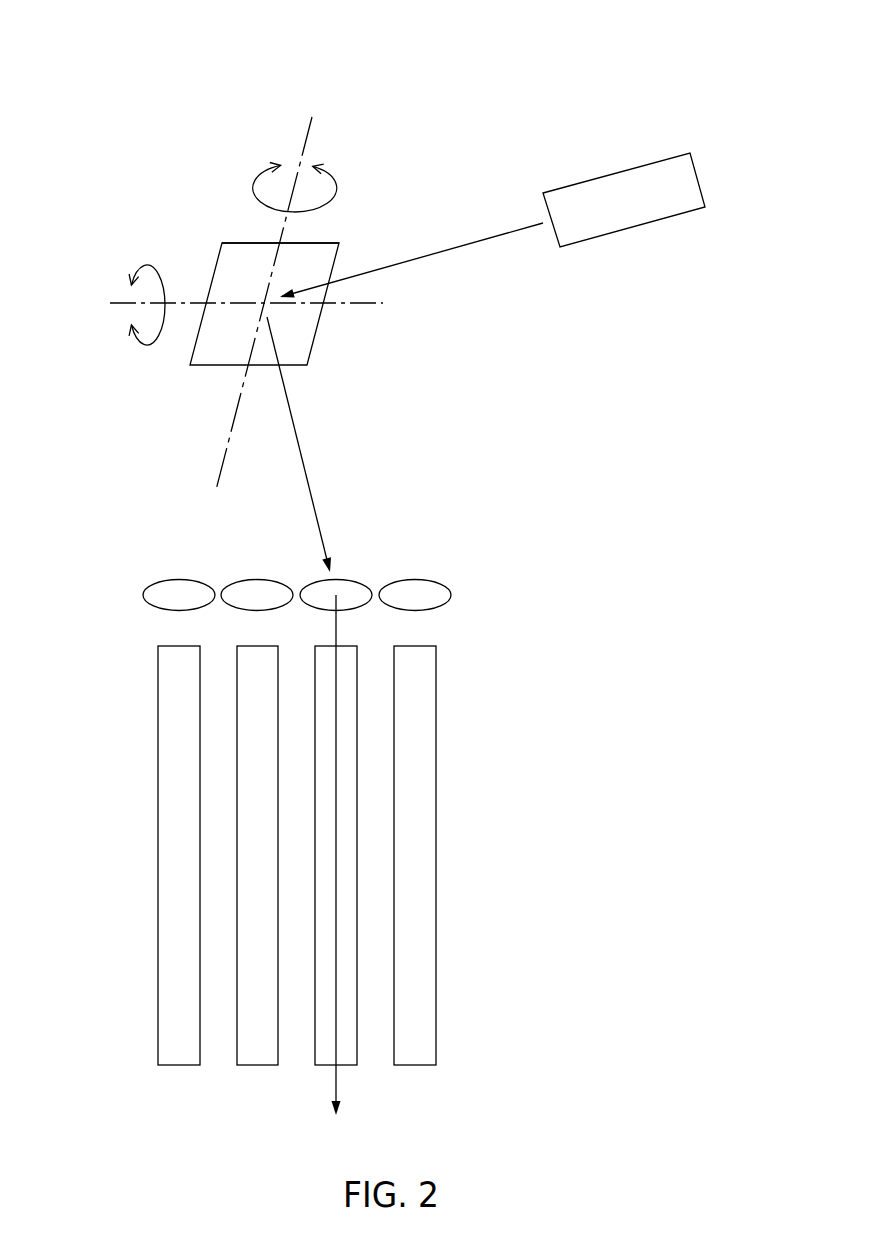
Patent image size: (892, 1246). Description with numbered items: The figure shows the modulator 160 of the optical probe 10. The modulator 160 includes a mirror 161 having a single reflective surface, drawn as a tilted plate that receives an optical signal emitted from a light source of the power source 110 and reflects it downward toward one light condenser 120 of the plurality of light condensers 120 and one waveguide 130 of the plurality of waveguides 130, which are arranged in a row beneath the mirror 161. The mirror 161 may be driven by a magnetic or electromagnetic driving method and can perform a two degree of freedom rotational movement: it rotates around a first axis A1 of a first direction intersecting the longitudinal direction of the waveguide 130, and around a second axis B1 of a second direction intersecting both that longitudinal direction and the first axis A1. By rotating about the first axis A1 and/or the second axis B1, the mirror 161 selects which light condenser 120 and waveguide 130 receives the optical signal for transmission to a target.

The optical probe 10 is at (132, 82).
The power source 110 is at (621, 182).
The light condenser 120 is at (428, 580).
The waveguide 130 is at (433, 803).
The modulator 160 is at (211, 376).
The mirror 161 is at (222, 242).
The first axis A1 is at (230, 305).
The second axis B1 is at (276, 289).